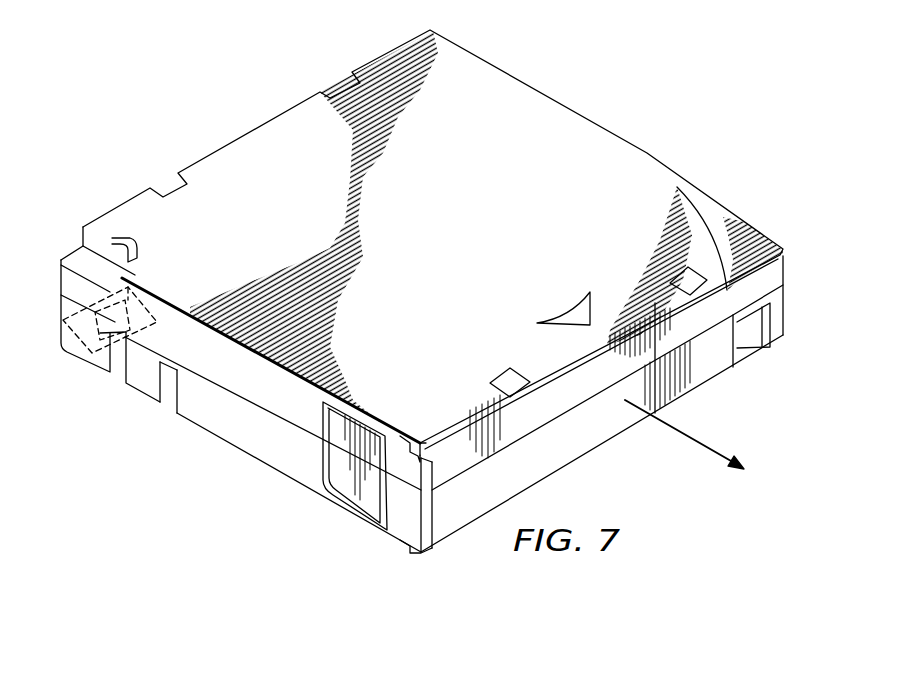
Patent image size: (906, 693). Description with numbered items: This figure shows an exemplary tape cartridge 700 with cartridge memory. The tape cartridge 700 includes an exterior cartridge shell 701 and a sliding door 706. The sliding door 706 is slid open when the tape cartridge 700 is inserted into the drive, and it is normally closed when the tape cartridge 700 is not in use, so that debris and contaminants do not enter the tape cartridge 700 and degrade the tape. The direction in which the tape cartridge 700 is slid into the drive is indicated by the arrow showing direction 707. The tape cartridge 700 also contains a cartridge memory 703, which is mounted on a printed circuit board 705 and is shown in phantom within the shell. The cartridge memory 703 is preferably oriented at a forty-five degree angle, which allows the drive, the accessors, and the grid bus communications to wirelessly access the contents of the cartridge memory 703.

The tape cartridge 700 is at (620, 87).
The exterior cartridge shell 701 is at (246, 132).
The cartridge memory 703 is at (147, 283).
The printed circuit board 705 is at (70, 350).
The sliding door 706 is at (350, 492).
The direction 707 is at (714, 452).